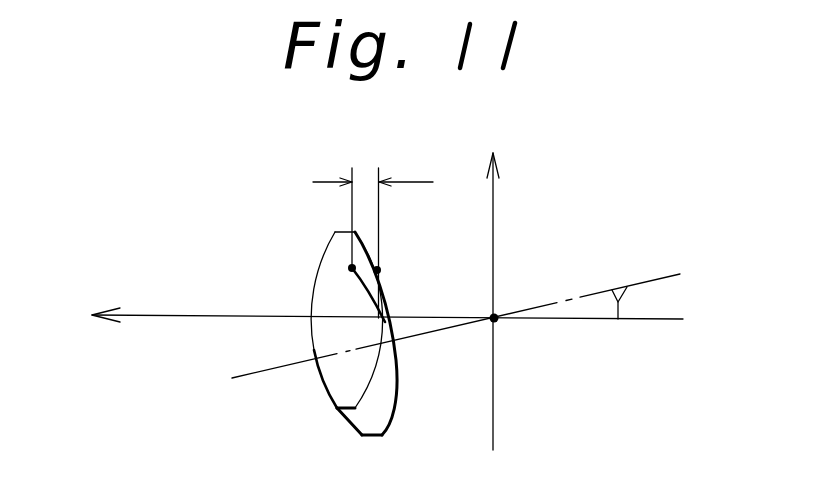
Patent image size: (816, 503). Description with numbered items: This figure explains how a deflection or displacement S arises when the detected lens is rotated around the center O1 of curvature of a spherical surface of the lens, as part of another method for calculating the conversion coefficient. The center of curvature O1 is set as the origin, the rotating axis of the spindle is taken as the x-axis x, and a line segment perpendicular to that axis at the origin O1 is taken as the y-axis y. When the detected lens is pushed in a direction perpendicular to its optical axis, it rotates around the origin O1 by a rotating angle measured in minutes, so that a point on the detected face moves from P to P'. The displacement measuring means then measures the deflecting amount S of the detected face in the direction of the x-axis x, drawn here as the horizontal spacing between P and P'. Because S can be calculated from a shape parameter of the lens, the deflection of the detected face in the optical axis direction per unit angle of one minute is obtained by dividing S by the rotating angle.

The x-axis x is at (369, 311).
The y-axis y is at (493, 281).
The center of curvature O1 is at (517, 343).
The deflecting amount S is at (373, 230).
The point on lens surface P is at (394, 257).
The shifted point on tilted lens surface P' is at (309, 280).